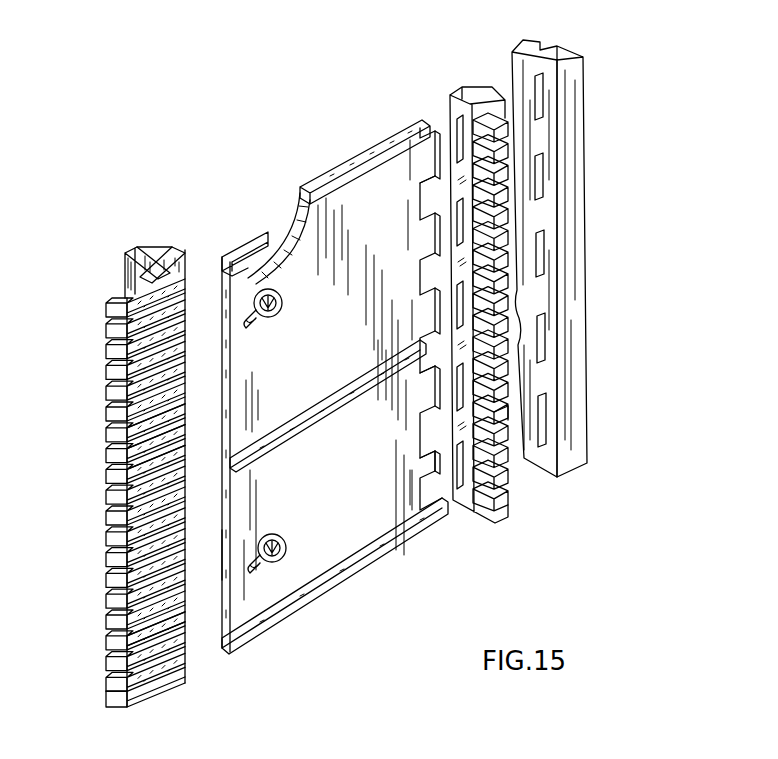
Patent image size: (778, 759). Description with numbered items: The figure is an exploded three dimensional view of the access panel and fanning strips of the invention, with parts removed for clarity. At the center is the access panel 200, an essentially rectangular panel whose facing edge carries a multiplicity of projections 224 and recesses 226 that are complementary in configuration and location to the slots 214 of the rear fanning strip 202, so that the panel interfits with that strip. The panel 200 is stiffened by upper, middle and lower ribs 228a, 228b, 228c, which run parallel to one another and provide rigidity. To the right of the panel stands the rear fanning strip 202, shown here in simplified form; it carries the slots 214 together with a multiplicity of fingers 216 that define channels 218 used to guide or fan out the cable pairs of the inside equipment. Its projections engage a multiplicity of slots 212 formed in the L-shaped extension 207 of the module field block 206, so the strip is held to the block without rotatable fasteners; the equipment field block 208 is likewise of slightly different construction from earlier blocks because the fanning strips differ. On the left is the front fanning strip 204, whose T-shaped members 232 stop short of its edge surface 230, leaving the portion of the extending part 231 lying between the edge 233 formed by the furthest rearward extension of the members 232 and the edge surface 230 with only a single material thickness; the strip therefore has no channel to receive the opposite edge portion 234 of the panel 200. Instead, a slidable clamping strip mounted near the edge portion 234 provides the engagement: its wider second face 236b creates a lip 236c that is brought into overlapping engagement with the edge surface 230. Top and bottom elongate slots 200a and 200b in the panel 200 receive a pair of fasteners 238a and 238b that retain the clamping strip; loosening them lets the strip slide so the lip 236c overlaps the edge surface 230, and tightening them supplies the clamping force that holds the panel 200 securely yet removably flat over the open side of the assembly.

The access panel 200 is at (356, 586).
The top elongate slot 200a is at (252, 326).
The bottom elongate slot 200b is at (252, 561).
The rear fanning strip 202 is at (505, 525).
The front fanning strip 204 is at (148, 684).
The module field block 206 is at (590, 438).
The L-shaped extension 207 is at (581, 192).
The equipment field block 208 is at (174, 682).
The slots 212 is at (543, 413).
The slots 214 is at (457, 125).
The fingers 216 is at (498, 478).
The channels 218 is at (485, 392).
The projections 224 is at (428, 234).
The recesses 226 is at (430, 448).
The upper rib 228a is at (362, 155).
The middle rib 228b is at (280, 435).
The lower rib 228c is at (279, 636).
The edge surface 230 is at (183, 265).
The extending part 231 is at (175, 257).
The T-shaped members 232 is at (135, 460).
The edge 233 is at (190, 488).
The opposite edge portion 234 is at (223, 530).
The second face 236b is at (262, 234).
The lip 236c is at (222, 257).
The fastener 238a is at (276, 318).
The fastener 238b is at (286, 540).